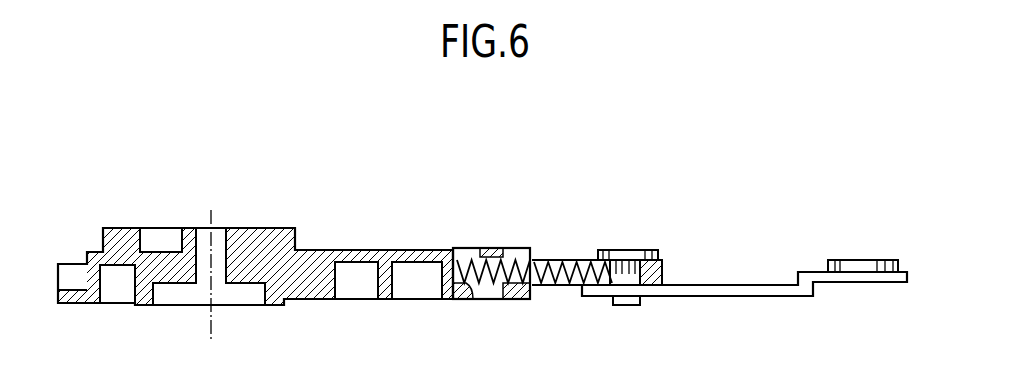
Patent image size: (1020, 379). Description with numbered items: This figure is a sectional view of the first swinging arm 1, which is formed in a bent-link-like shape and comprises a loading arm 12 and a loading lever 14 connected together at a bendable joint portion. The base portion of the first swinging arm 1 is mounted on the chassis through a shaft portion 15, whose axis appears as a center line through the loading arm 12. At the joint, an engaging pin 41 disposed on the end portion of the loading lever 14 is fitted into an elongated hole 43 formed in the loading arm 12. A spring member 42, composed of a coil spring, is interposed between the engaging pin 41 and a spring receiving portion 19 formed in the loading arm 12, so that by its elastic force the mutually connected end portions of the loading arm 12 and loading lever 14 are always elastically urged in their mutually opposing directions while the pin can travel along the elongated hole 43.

The first swinging arm 1 is at (723, 210).
The loading arm 12 is at (333, 250).
The loading lever 14 is at (732, 297).
The shaft portion 15 is at (212, 332).
The spring holder 19 is at (466, 249).
The engaging pin 41 is at (622, 262).
The spring member 42 is at (570, 262).
The elongated hole 43 is at (558, 260).